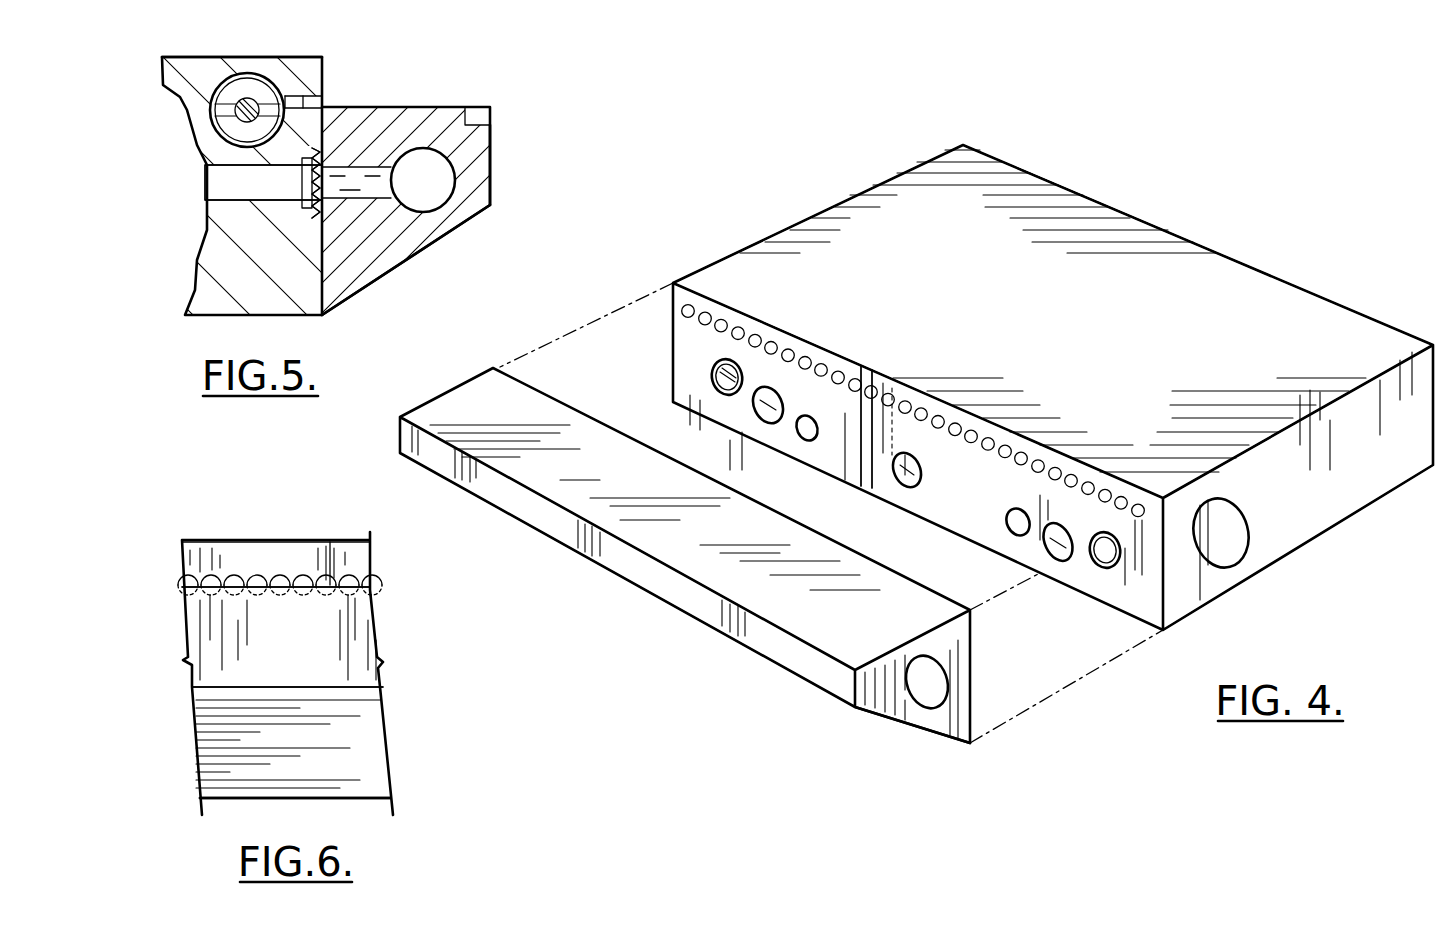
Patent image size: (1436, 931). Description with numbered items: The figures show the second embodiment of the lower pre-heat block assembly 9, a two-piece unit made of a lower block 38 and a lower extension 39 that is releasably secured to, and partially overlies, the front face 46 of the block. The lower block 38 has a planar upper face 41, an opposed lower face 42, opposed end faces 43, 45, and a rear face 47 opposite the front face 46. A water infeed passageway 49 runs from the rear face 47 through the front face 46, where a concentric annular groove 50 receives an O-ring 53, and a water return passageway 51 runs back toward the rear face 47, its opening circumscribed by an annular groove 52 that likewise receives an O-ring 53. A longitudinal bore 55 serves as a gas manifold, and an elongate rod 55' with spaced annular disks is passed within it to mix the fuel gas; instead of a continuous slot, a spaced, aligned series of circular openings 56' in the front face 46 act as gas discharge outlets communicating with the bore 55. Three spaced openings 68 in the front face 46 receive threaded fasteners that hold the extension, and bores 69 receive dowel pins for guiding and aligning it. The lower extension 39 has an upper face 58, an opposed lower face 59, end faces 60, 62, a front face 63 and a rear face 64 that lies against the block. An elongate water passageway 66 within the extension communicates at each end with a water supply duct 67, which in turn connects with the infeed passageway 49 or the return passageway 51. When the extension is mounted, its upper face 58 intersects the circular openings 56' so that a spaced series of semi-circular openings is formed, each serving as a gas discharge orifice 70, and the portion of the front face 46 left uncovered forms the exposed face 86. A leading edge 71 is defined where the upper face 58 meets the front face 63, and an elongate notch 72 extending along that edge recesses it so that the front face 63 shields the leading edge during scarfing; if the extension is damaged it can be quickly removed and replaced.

In FIG. 4, the lower pre-heat block assembly 9 is at (1285, 249).
In FIG. 5, the lower block 38 is at (180, 100).
In FIG. 4, the lower block 38 is at (1247, 310).
In FIG. 4, the lower extension 39 is at (548, 408).
In FIG. 5, the upper face 41 is at (177, 57).
In FIG. 6, the upper face 41 is at (290, 538).
In FIG. 4, the upper face 41 is at (1203, 389).
In FIG. 4, the lower face 42 is at (1216, 578).
In FIG. 4, the end face 43 is at (1341, 437).
In FIG. 4, the end face 45 is at (795, 226).
In FIG. 6, the front face 46 is at (362, 560).
In FIG. 4, the front face 46 is at (858, 490).
In FIG. 4, the rear face 47 is at (1160, 230).
In FIG. 5, the water infeed passageway 49 is at (218, 195).
In FIG. 4, the water infeed passageway 49 is at (715, 372).
In FIG. 5, the annular groove 50 is at (312, 215).
In FIG. 4, the annular groove 50 is at (716, 386).
In FIG. 5, the water return passageway 51 is at (218, 195).
In FIG. 4, the water return passageway 51 is at (1095, 566).
In FIG. 5, the annular groove 52 is at (312, 215).
In FIG. 4, the annular groove 52 is at (1110, 569).
In FIG. 5, the O-ring 53 is at (318, 222).
In FIG. 5, the bore 55 is at (247, 73).
In FIG. 4, the bore 55 is at (1228, 556).
In FIG. 5, the elongate rod 55' is at (200, 142).
In FIG. 5, the circular openings 56' is at (276, 66).
In FIG. 4, the circular openings 56' is at (900, 414).
In FIG. 5, the upper face 58 is at (412, 107).
In FIG. 6, the upper face 58 is at (202, 580).
In FIG. 4, the upper face 58 is at (734, 569).
In FIG. 5, the lower face 59 is at (370, 287).
In FIG. 6, the lower face 59 is at (325, 800).
In FIG. 4, the lower face 59 is at (897, 725).
In FIG. 4, the end face 60 is at (932, 652).
In FIG. 4, the end face 62 is at (458, 388).
In FIG. 5, the front face 63 is at (493, 135).
In FIG. 6, the front face 63 is at (326, 752).
In FIG. 4, the front face 63 is at (577, 545).
In FIG. 4, the rear face 64 is at (693, 472).
In FIG. 5, the water passageway 66 is at (408, 192).
In FIG. 4, the water passageway 66 is at (932, 674).
In FIG. 5, the water supply duct 67 is at (356, 182).
In FIG. 4, the spaced openings 68 is at (762, 420).
In FIG. 4, the bores 69 is at (800, 440).
In FIG. 5, the gas discharge orifice 70 is at (322, 100).
In FIG. 6, the gas discharge orifice 70 is at (340, 584).
In FIG. 5, the leading edge 71 is at (470, 107).
In FIG. 4, the leading edge 71 is at (795, 652).
In FIG. 5, the notch 72 is at (482, 113).
In FIG. 5, the exposed face 86 is at (325, 88).
In FIG. 6, the exposed face 86 is at (362, 560).